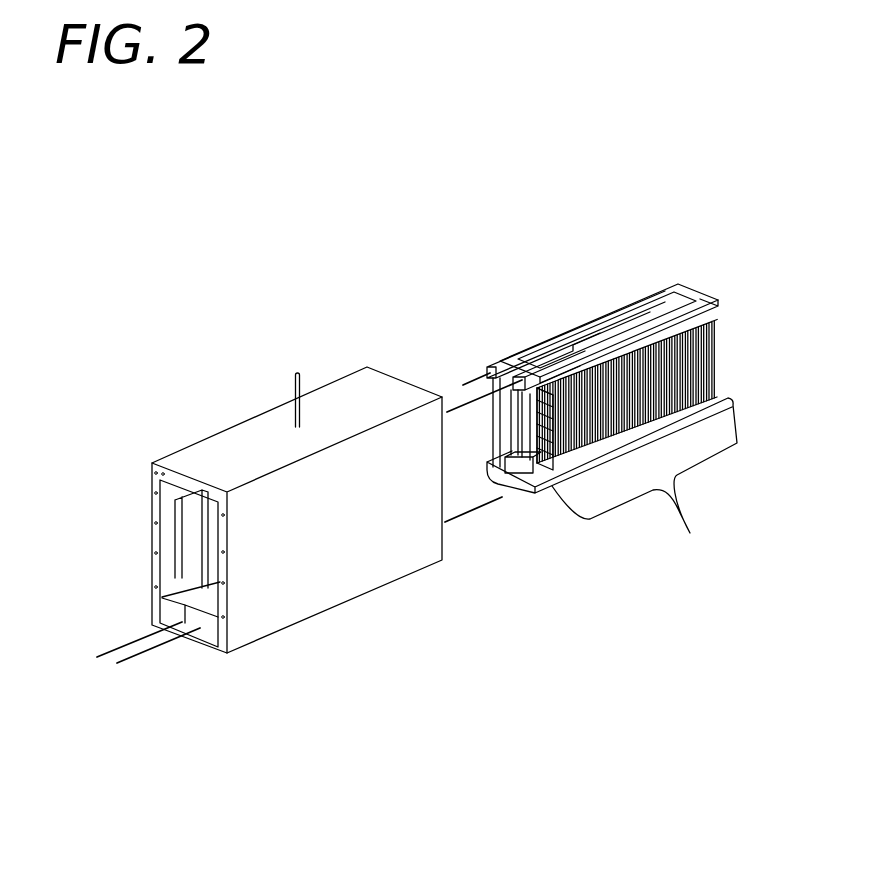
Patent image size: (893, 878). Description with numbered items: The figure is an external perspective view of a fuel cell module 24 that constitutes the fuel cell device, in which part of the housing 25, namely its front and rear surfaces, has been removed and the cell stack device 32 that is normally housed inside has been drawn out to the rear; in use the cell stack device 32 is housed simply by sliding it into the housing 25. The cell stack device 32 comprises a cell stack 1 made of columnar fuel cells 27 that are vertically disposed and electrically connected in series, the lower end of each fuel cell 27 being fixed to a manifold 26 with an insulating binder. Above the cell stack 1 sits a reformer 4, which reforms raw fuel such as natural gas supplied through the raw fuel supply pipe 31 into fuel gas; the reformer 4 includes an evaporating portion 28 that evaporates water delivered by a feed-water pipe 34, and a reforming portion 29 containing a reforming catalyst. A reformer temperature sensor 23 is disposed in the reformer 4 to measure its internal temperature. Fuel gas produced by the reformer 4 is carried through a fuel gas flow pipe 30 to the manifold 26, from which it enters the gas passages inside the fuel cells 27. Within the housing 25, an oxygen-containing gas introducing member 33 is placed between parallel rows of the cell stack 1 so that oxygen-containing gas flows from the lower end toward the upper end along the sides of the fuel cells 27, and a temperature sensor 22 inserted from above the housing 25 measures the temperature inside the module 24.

The cell stack 1 is at (612, 489).
The reformer 4 is at (692, 287).
The temperature sensor 22 is at (291, 378).
The reformer temperature sensor 23 is at (466, 387).
The module 24 is at (244, 172).
The housing 25 is at (270, 608).
The manifold 26 is at (548, 477).
The fuel cell 27 is at (720, 333).
The evaporating portion 28 is at (553, 368).
The reforming portion 29 is at (653, 292).
The fuel gas flow pipe 30 is at (497, 470).
The raw fuel supply pipe 31 is at (442, 398).
The cell stack device 32 is at (602, 284).
The oxygen-containing gas introducing member 33 is at (213, 527).
The feed-water pipe 34 is at (458, 408).